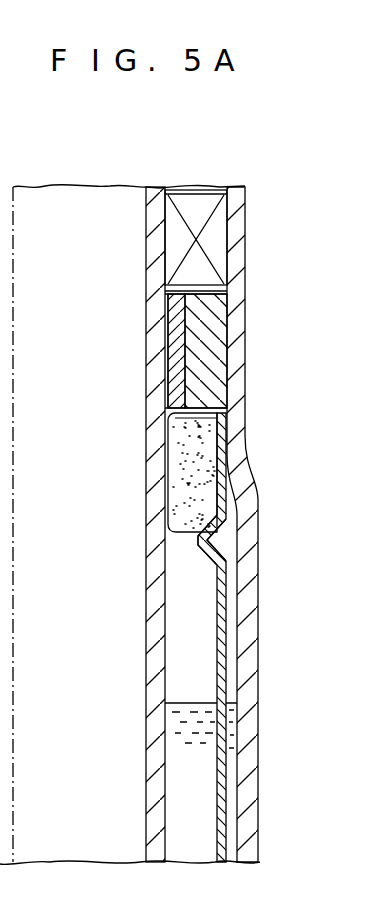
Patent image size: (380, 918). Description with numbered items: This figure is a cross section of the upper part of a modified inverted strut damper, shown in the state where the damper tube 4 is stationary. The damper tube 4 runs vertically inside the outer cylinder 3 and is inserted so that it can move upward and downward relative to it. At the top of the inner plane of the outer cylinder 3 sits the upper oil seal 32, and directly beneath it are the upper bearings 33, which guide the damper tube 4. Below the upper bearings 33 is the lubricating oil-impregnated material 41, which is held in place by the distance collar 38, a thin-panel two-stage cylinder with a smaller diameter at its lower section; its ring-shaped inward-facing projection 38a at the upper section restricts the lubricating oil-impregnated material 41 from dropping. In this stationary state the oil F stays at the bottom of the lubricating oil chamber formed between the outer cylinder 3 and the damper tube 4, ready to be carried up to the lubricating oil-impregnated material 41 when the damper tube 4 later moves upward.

The damper tube 4 is at (145, 226).
The outer cylinder 3 is at (247, 227).
The upper oil seal 32 is at (215, 247).
The upper bearings 33 is at (227, 349).
The lubricating oil-impregnated material 41 is at (205, 438).
The ring-shaped inward-facing projection 38a is at (214, 535).
The distance collar 38 is at (227, 648).
The oil F is at (207, 775).